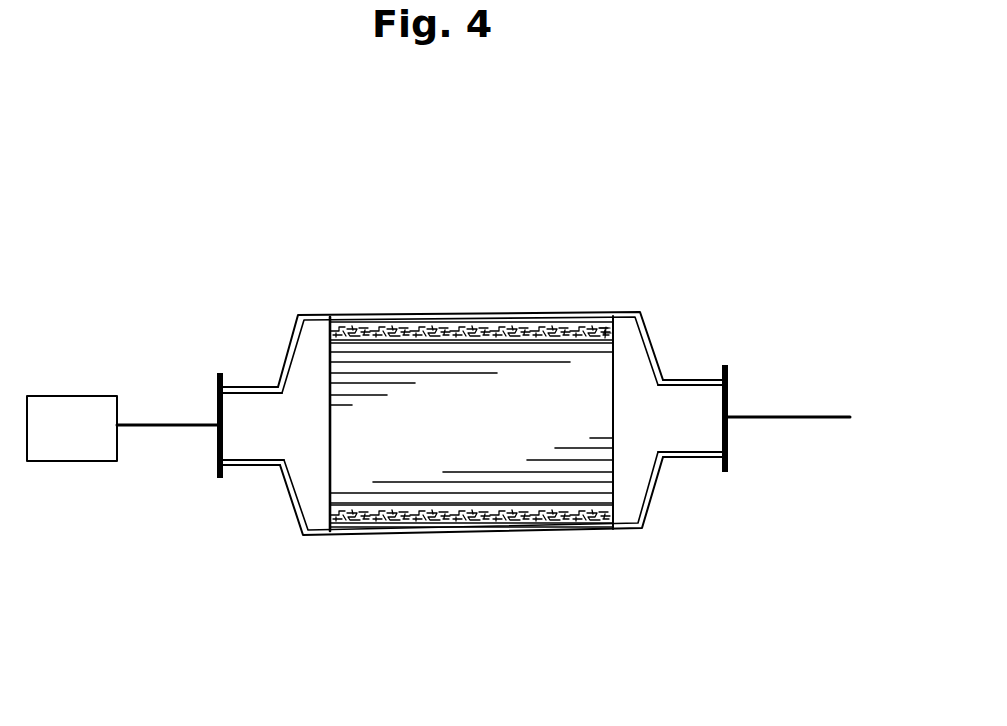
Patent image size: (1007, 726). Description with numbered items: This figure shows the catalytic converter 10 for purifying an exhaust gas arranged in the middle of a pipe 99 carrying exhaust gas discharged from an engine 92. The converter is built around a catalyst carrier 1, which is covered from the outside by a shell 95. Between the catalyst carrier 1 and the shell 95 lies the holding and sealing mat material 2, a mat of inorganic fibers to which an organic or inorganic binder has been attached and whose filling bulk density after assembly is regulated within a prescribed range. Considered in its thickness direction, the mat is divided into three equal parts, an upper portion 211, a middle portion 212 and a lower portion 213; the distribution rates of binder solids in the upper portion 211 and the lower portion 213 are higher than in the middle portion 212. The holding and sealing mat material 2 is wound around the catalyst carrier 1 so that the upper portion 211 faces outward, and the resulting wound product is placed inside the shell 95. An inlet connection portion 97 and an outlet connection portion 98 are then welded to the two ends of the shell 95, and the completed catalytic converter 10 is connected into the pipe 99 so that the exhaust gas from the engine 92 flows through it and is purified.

The catalyst carrier 1 is at (490, 415).
The holding and sealing mat material 2 is at (440, 313).
The upper portion 211 is at (535, 328).
The middle portion 212 is at (574, 330).
The lower portion 213 is at (605, 324).
The catalytic converter 10 is at (550, 562).
The engine 92 is at (78, 462).
The shell 95 is at (443, 535).
The inlet connection portion 97 is at (246, 467).
The outlet connection portion 98 is at (694, 460).
The pipe 99 is at (156, 428).